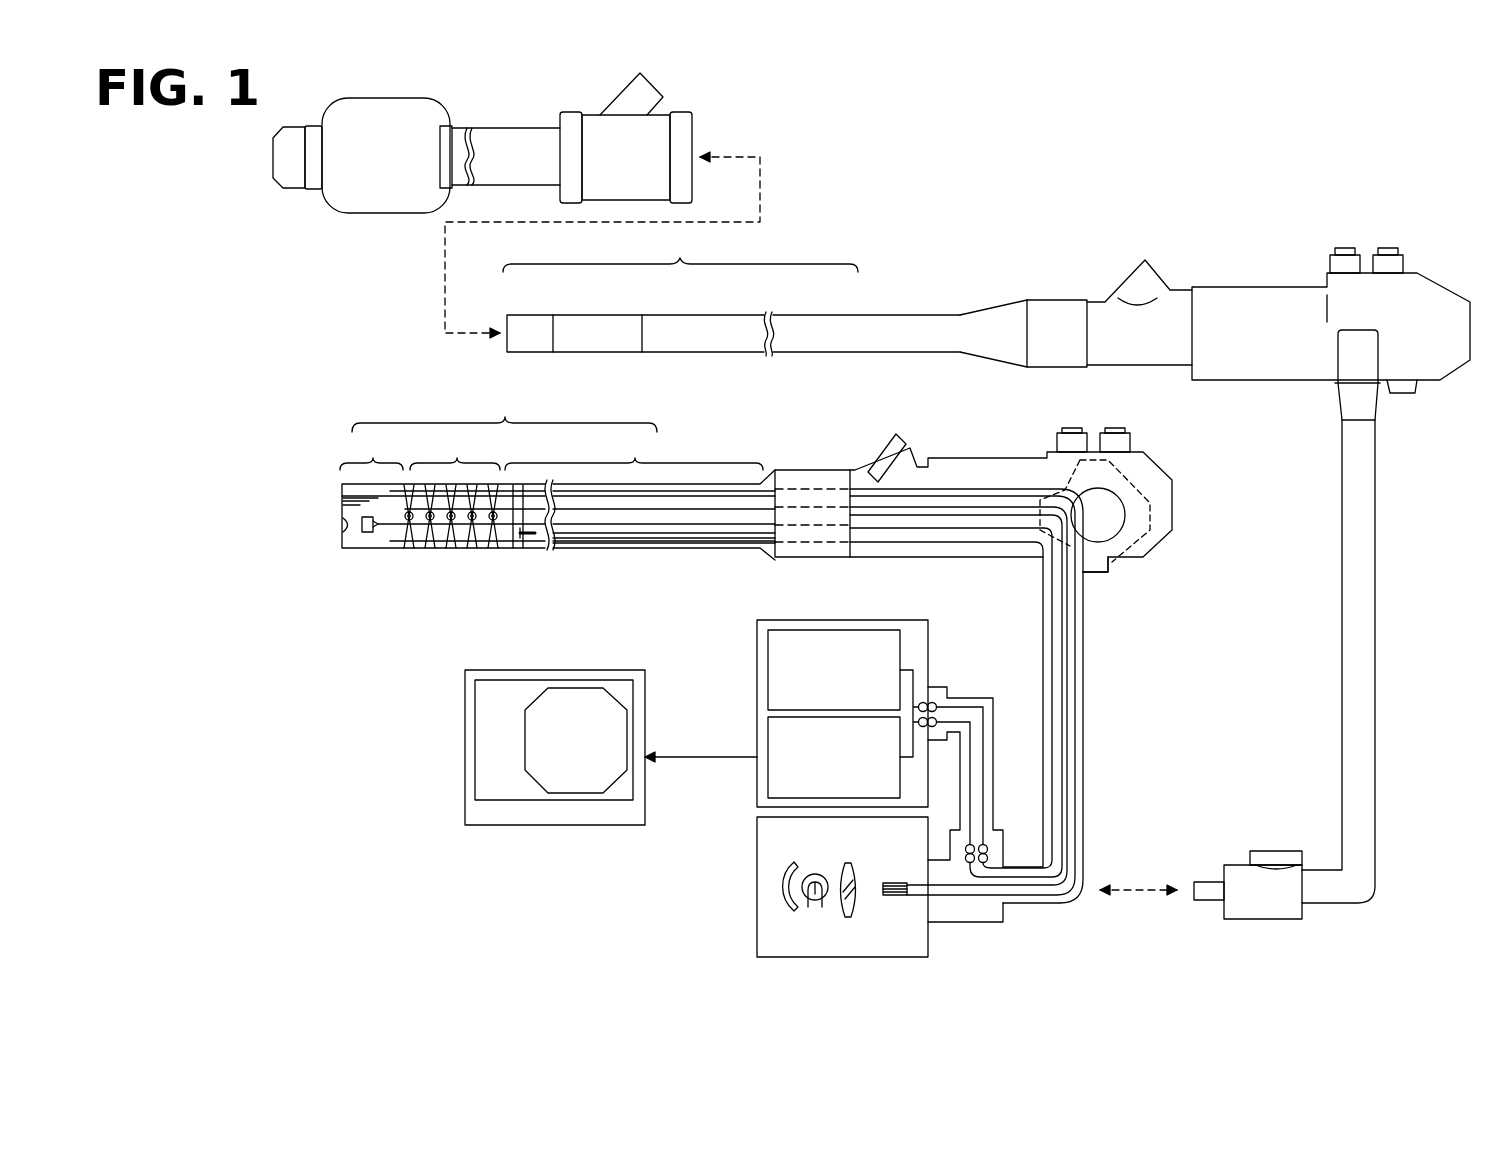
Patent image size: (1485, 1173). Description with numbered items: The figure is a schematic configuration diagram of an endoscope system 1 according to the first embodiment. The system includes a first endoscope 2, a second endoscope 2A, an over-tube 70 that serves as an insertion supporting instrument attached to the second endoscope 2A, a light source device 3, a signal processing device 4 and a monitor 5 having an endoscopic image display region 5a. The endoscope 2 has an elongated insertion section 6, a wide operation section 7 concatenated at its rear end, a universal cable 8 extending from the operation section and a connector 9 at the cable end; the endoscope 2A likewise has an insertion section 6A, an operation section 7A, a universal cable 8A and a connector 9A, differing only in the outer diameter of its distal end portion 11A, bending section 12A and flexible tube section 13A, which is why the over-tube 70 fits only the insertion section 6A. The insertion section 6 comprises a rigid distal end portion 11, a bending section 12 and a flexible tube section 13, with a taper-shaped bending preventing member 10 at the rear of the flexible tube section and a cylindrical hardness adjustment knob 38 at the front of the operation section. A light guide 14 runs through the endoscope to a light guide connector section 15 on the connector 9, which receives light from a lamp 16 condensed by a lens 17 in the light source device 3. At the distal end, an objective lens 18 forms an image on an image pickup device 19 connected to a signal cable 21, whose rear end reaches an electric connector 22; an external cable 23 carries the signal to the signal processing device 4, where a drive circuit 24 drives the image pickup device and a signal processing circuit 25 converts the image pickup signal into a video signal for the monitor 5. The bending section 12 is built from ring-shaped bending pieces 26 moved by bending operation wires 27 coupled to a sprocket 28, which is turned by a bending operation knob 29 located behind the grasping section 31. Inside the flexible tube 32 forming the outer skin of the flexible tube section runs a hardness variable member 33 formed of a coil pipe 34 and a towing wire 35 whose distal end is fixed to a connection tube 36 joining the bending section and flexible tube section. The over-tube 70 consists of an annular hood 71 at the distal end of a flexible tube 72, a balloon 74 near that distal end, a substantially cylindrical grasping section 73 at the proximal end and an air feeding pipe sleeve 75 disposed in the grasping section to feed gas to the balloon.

The endoscope system 1 is at (387, 775).
The first endoscope 2 is at (758, 671).
The second endoscope 2A is at (986, 593).
The light source device 3 is at (815, 887).
The signal processing device 4 is at (786, 688).
The monitor 5 is at (555, 762).
The endoscopic image display region 5a is at (573, 688).
The first insertion section 6 is at (538, 505).
The second insertion section 6A is at (731, 292).
The operation section 7 is at (1033, 507).
The operation section 7A is at (1237, 285).
The universal cable 8 is at (997, 696).
The universal cable 8A is at (1375, 605).
The connector 9 is at (990, 922).
The connector 9A is at (1288, 920).
The bending preventing member 10 is at (745, 556).
The distal end portion 11 is at (371, 466).
The distal end portion 11A is at (540, 318).
The bending section 12 is at (470, 521).
The bending section 12A is at (625, 318).
The flexible tube section 13 is at (634, 449).
The flexible tube section 13A is at (828, 318).
The light guide 14 is at (1068, 653).
The light guide connector section 15 is at (905, 897).
The lamp 16 is at (815, 873).
The lens 17 is at (858, 870).
The objective lens 18 is at (343, 532).
The image pickup device 19 is at (368, 533).
The signal cable 21 is at (630, 527).
The electric connector 22 is at (1005, 855).
The external cable 23 is at (968, 697).
The drive circuit 24 is at (880, 630).
The signal processing circuit 25 is at (768, 735).
The bending piece 26 is at (465, 538).
The bending operation wire 27 is at (513, 485).
The sprocket 28 is at (1107, 520).
The bending operation knob 29 is at (1098, 572).
The grasping section 31 is at (1017, 460).
The flexible tube 32 is at (697, 483).
The hardness variable member 33 is at (670, 542).
The coil pipe 34 is at (583, 540).
The towing wire 35 is at (530, 538).
The connection tube 36 is at (520, 540).
The hardness adjustment knob 38 is at (818, 558).
The over-tube 70 is at (307, 228).
The hood 71 is at (290, 125).
The flexible tube 72 is at (515, 126).
The grasping section 73 is at (655, 143).
The balloon 74 is at (375, 214).
The air feeding pipe sleeve 75 is at (615, 95).